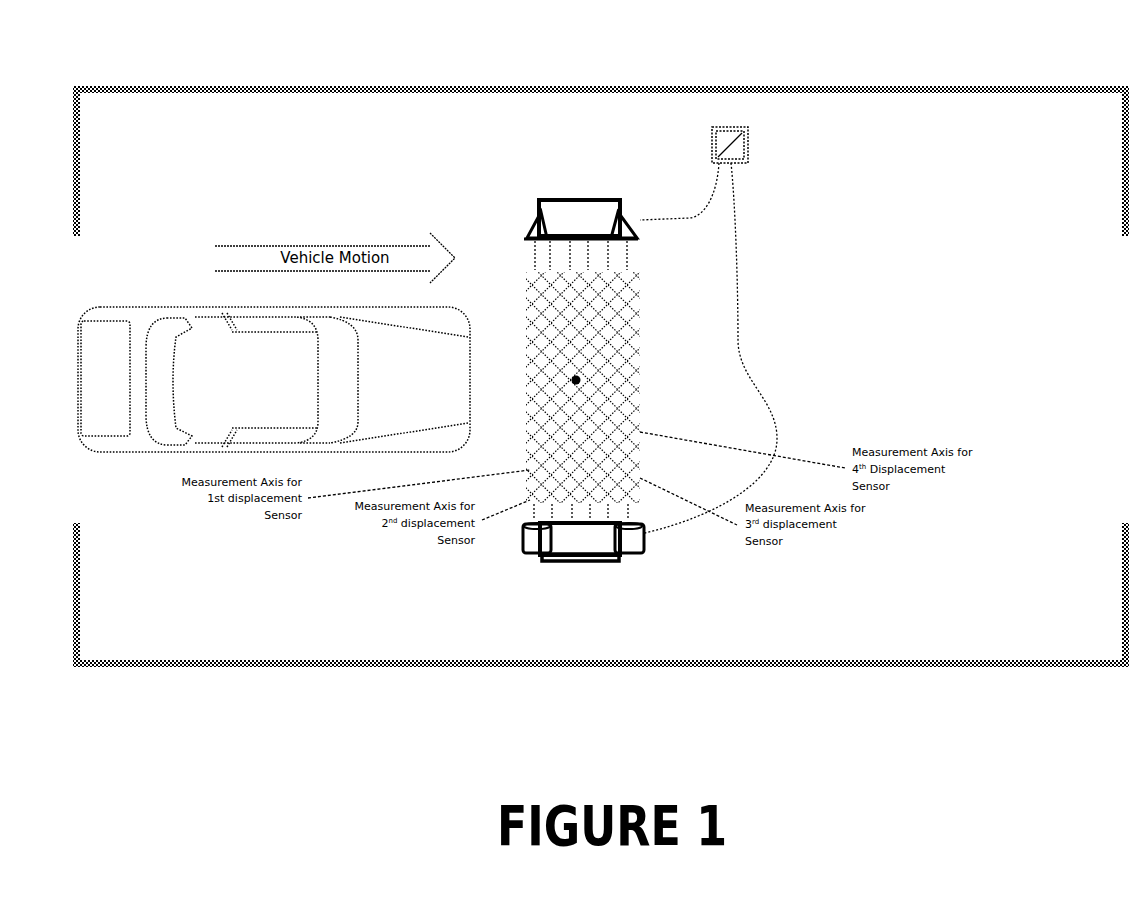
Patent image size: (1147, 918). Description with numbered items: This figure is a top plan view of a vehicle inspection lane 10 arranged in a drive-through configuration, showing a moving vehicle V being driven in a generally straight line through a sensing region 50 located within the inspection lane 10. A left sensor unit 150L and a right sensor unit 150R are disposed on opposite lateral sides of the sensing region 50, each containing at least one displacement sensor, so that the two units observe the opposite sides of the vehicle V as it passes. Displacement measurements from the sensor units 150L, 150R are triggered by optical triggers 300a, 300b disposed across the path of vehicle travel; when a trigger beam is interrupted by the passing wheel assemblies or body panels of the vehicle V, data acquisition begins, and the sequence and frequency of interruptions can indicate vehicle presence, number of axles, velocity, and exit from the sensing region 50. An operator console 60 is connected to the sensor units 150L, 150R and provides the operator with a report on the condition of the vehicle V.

The vehicle inspection lane 10 is at (233, 566).
The vehicle V is at (220, 383).
The left sensor unit 150L is at (620, 198).
The right sensor unit 150R is at (608, 557).
The sensing region 50 is at (580, 378).
The operator console 60 is at (716, 128).
The first optical trigger 300a is at (527, 552).
The second optical trigger 300b is at (633, 556).